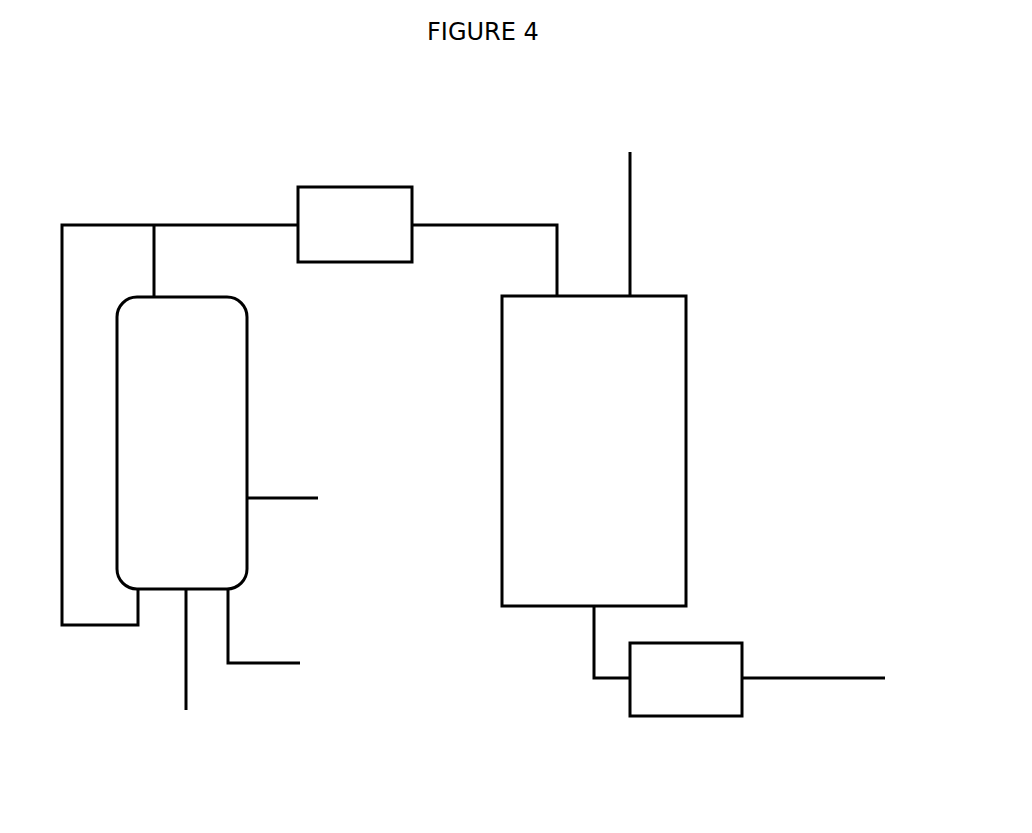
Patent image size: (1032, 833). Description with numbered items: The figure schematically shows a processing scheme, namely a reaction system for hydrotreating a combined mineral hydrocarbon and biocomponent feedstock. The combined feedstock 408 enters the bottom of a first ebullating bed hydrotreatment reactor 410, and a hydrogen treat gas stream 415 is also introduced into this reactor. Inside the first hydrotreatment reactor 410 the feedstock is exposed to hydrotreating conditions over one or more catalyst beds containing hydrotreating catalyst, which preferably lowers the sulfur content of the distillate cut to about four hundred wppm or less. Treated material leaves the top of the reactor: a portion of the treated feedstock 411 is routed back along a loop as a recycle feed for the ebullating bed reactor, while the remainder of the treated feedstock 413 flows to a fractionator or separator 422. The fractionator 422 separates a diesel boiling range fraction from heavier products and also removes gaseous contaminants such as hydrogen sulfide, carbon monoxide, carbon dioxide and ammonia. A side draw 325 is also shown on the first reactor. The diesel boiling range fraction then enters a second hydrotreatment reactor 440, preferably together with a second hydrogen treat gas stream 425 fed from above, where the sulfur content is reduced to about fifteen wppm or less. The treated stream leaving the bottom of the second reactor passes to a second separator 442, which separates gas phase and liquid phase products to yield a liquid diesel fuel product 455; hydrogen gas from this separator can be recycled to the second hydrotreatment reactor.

The portion of the treated feedstock 411 is at (100, 207).
The remainder of the treated feedstock 413 is at (244, 207).
The first ebullating bed hydrotreatment reactor 410 is at (182, 443).
The fractionator or separator 422 is at (427, 241).
The second hydrotreatment reactor 440 is at (594, 487).
The second hydrogen treat gas stream 425 is at (647, 242).
The second separator 442 is at (686, 679).
The liquid diesel fuel product 455 is at (850, 660).
The side outlet 325 is at (302, 516).
The combined mineral hydrocarbon and biocomponent feedstock 408 is at (175, 680).
The hydrogen treat gas stream 415 is at (283, 680).